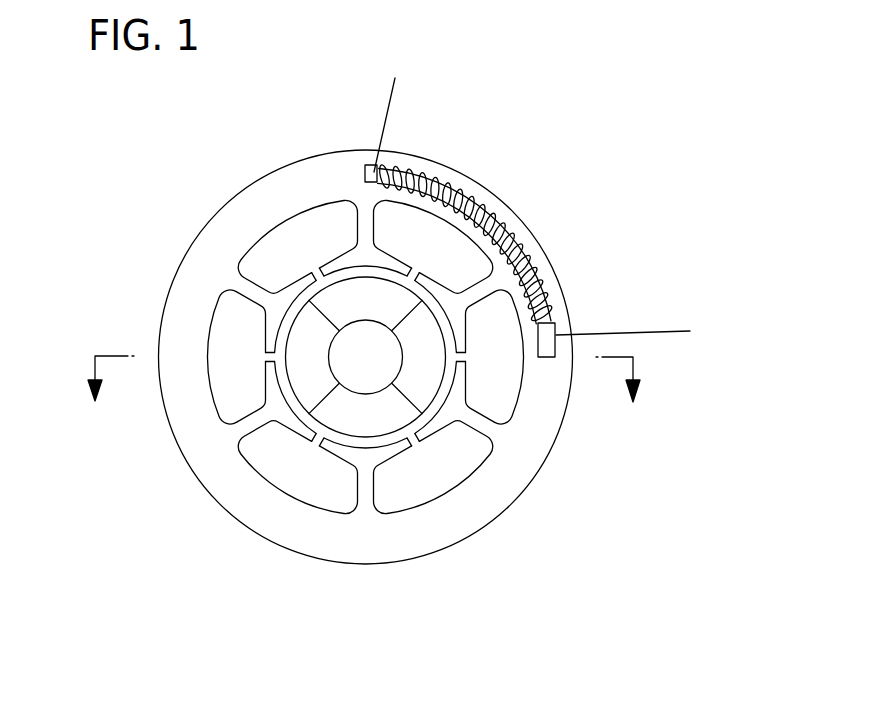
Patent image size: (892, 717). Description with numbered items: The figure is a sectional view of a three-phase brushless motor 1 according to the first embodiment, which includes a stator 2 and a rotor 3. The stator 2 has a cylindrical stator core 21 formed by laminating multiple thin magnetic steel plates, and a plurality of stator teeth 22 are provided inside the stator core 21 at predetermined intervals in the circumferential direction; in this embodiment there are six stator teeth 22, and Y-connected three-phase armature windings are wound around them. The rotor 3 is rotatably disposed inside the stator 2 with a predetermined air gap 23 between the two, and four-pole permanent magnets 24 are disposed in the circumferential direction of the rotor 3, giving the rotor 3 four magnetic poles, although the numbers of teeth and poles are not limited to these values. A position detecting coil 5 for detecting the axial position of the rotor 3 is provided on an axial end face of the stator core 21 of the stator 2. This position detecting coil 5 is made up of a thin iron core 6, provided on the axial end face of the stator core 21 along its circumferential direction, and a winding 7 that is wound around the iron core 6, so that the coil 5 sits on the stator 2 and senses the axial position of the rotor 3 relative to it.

The motor 1 is at (661, 143).
The stator 2 is at (498, 568).
The rotor 3 is at (332, 452).
The position detecting coil 5 is at (508, 150).
The iron core 6 is at (370, 165).
The winding 7 is at (645, 331).
The stator core 21 is at (271, 184).
The stator teeth 22 is at (252, 287).
The air gap 23 is at (395, 442).
The permanent magnets 24 is at (294, 341).